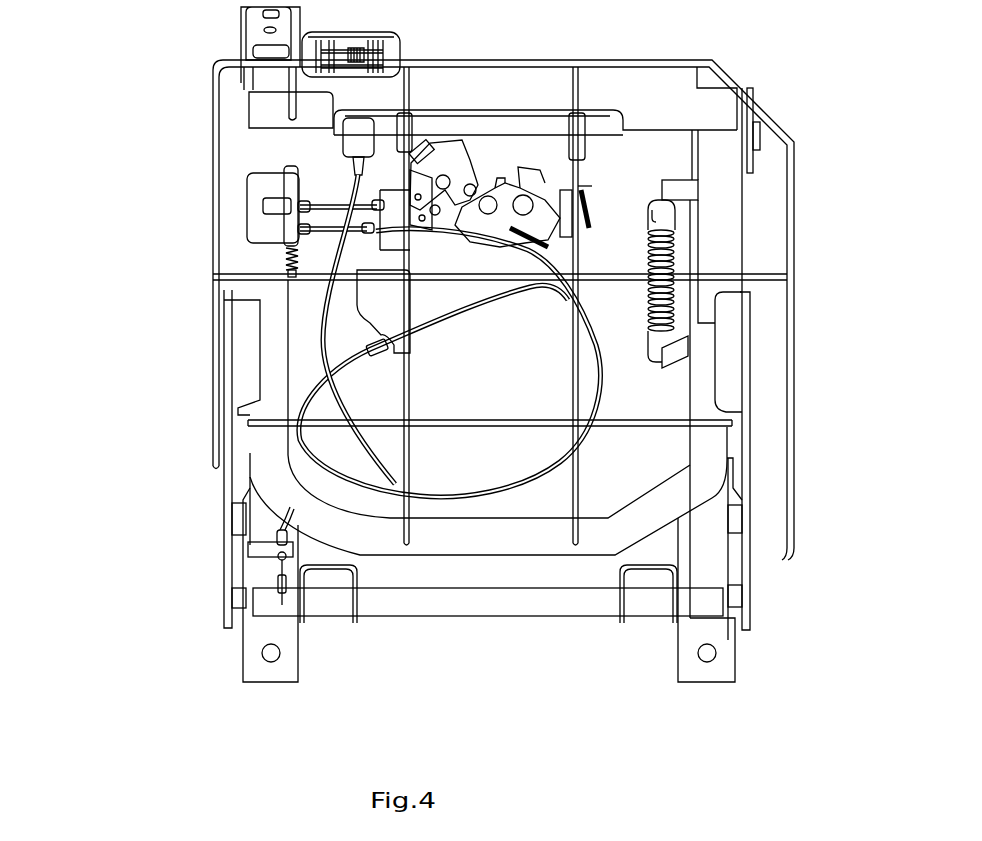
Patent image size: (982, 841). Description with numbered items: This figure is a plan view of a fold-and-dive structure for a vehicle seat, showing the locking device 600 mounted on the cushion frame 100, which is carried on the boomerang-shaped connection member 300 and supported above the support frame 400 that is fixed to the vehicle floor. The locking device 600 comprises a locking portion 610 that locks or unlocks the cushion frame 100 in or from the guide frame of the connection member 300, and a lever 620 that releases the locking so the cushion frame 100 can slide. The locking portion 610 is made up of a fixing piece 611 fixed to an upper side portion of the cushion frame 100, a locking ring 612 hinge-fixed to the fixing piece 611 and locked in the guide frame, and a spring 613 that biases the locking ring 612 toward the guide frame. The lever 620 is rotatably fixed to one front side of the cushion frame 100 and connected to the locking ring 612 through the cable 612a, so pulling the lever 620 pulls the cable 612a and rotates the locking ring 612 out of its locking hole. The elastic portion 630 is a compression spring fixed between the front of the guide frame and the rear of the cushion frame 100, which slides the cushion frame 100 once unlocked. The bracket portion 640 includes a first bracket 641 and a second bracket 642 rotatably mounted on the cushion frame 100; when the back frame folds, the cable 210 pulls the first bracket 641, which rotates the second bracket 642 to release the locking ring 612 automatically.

The cushion frame 100 is at (729, 218).
The cable 210 is at (276, 506).
The connection member 300 is at (230, 481).
The support frame 400 is at (244, 643).
The locking device 600 is at (88, 52).
The locking portion 610 is at (148, 183).
The fixing piece 611 is at (252, 186).
The locking ring 612 is at (292, 207).
The cable 612a is at (290, 278).
The spring 613 is at (287, 248).
The lever 620 is at (321, 50).
The elastic portion 630 is at (572, 232).
The bracket portion 640 is at (148, 312).
The first bracket 641 is at (368, 352).
The second bracket 642 is at (305, 264).